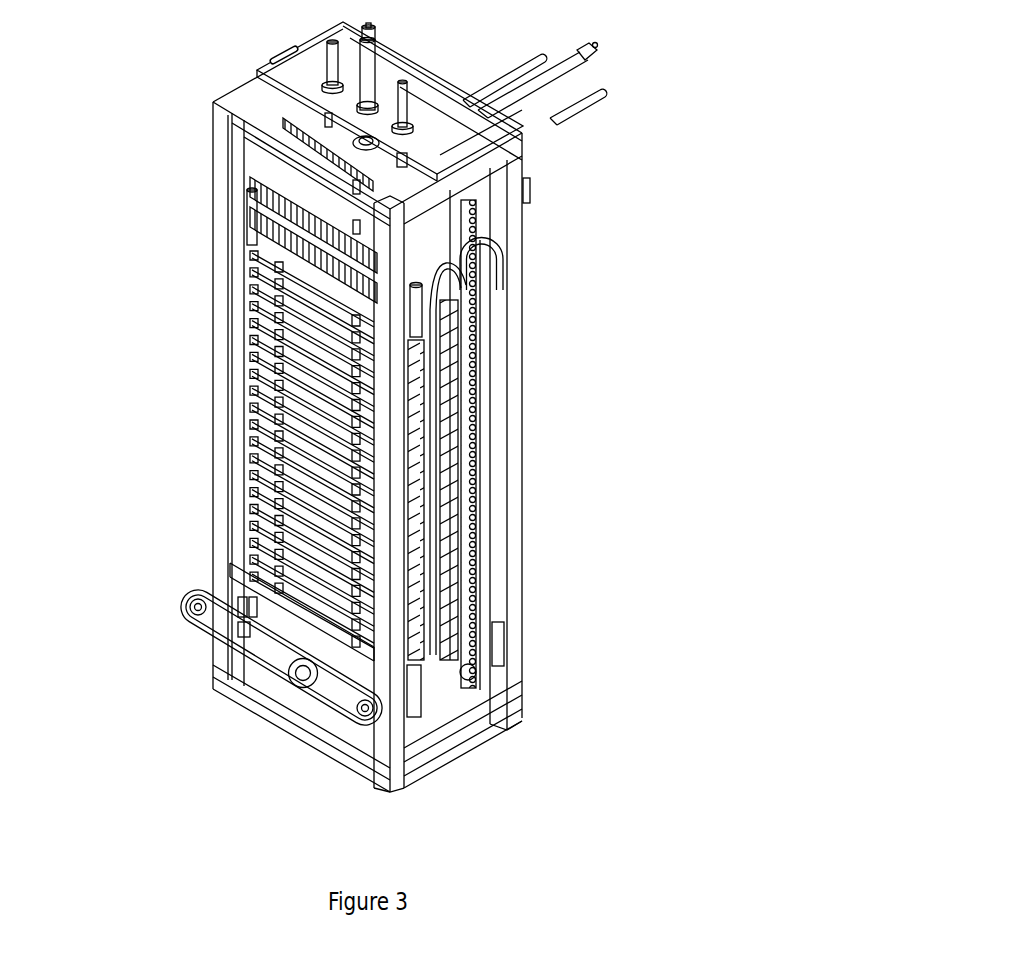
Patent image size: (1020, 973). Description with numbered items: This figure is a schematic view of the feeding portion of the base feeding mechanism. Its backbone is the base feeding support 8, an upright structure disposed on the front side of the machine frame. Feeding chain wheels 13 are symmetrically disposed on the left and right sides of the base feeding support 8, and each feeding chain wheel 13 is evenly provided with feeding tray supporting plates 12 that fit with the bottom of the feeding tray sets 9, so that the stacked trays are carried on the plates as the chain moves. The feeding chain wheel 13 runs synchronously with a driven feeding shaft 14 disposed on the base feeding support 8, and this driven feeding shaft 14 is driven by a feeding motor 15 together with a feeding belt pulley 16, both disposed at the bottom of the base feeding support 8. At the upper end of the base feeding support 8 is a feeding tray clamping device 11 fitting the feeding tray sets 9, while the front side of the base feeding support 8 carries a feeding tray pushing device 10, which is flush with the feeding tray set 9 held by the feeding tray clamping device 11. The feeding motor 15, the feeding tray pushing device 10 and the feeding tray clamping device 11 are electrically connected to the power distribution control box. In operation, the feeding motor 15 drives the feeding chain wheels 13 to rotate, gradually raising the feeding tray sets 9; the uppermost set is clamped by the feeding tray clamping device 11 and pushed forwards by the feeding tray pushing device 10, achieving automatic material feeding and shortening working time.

The base feeding support 8 is at (235, 443).
The feeding tray sets 9 is at (260, 282).
The feeding tray pushing device 10 is at (505, 97).
The feeding tray clamping device 11 is at (527, 183).
The feeding tray supporting plates 12 is at (480, 275).
The feeding chain wheels 13 is at (477, 483).
The driven feeding shaft 14 is at (507, 723).
The feeding motor 15 is at (335, 682).
The feeding belt pulley 16 is at (258, 682).